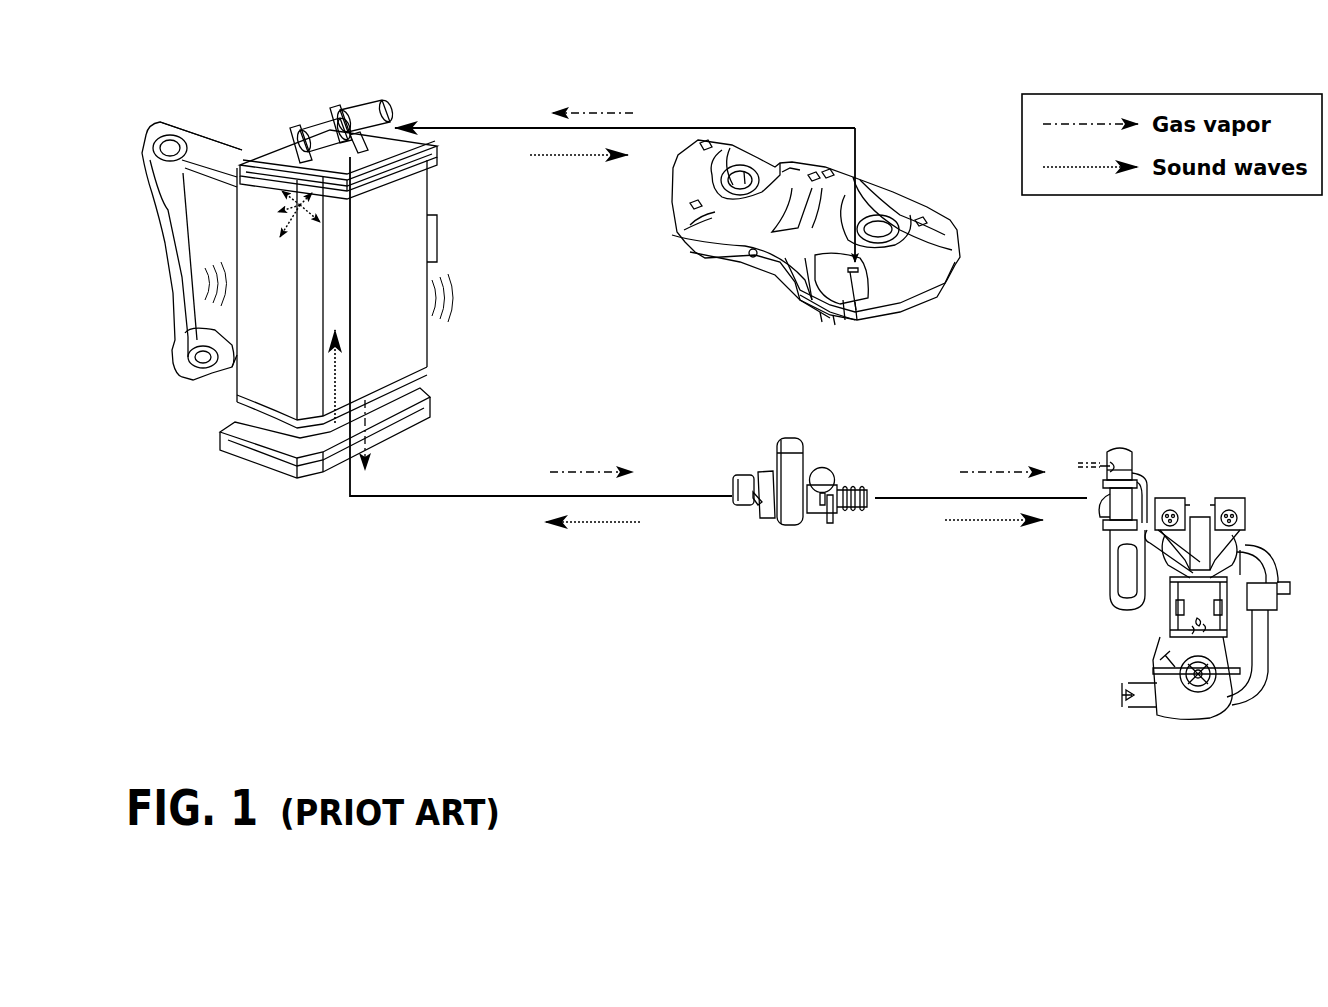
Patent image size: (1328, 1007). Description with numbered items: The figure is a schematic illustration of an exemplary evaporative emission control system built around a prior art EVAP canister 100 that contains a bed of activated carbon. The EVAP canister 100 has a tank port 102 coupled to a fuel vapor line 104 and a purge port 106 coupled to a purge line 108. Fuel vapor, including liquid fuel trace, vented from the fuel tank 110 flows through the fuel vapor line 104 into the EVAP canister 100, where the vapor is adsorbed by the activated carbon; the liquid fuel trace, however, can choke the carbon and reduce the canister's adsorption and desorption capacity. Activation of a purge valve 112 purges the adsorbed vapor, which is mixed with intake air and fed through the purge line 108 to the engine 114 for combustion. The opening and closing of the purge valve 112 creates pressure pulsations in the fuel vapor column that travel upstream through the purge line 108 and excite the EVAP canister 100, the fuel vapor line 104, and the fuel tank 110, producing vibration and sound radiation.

The EVAP canister 100 is at (412, 268).
The tank port 102 is at (357, 120).
The fuel vapor line 104 is at (663, 128).
The purge port 106 is at (325, 135).
The purge line 108 is at (432, 496).
The fuel tank 110 is at (962, 278).
The purge valve 112 is at (805, 462).
The engine 114 is at (1237, 552).